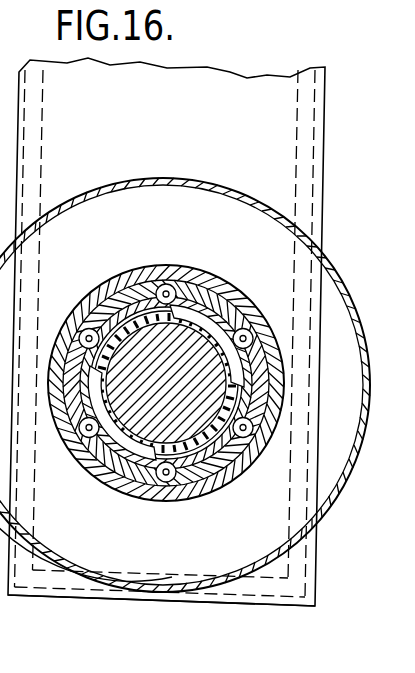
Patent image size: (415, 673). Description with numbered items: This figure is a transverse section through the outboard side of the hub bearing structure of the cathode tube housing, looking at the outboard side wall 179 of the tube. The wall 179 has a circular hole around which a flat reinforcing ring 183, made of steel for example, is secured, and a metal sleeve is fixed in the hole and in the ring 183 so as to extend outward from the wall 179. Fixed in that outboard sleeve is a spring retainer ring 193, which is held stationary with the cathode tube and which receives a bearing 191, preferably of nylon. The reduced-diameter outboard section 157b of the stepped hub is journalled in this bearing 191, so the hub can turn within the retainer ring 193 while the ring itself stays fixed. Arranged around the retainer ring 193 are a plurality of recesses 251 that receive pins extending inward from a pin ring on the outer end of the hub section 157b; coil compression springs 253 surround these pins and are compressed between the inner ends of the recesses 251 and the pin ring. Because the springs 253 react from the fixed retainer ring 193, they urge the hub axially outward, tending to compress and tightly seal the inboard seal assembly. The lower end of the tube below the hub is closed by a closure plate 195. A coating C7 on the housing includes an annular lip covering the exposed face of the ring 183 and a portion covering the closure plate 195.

The outboard side wall 179 is at (254, 78).
The coating C7 is at (120, 183).
The flat reinforcing ring 183 is at (209, 203).
The spring retainer ring 193 is at (217, 298).
The recesses 251 is at (167, 285).
The coil compression springs 253 is at (172, 288).
The bearing 191 is at (125, 440).
The reduced-diameter outboard section 157b is at (200, 437).
The closure plate 195 is at (58, 604).